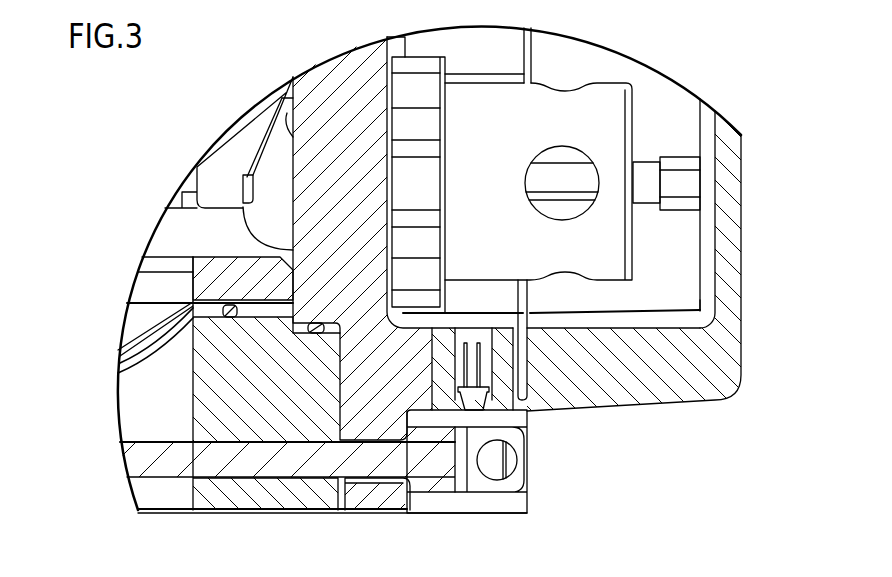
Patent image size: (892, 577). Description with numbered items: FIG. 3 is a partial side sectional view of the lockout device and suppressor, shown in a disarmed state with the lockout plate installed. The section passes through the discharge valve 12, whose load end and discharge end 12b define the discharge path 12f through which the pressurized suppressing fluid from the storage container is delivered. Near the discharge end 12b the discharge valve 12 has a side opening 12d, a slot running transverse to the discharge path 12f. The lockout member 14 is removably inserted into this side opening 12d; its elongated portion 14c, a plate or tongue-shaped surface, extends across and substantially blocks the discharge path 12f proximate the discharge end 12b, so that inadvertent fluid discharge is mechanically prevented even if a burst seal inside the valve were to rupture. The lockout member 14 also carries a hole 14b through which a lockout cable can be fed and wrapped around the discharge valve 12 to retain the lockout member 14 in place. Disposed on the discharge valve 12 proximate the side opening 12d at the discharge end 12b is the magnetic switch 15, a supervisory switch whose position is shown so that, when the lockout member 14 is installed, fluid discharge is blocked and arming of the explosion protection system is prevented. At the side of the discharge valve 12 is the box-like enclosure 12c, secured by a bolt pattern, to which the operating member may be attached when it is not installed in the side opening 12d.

The discharge valve 12 is at (777, 260).
The discharge end 12b is at (157, 512).
The enclosure 12c is at (737, 323).
The side opening 12d is at (373, 480).
The discharge path 12f is at (138, 395).
The lockout member 14 is at (517, 438).
The hole 14b is at (507, 475).
The elongated portion 14c is at (293, 460).
The magnetic switch 15 is at (502, 405).